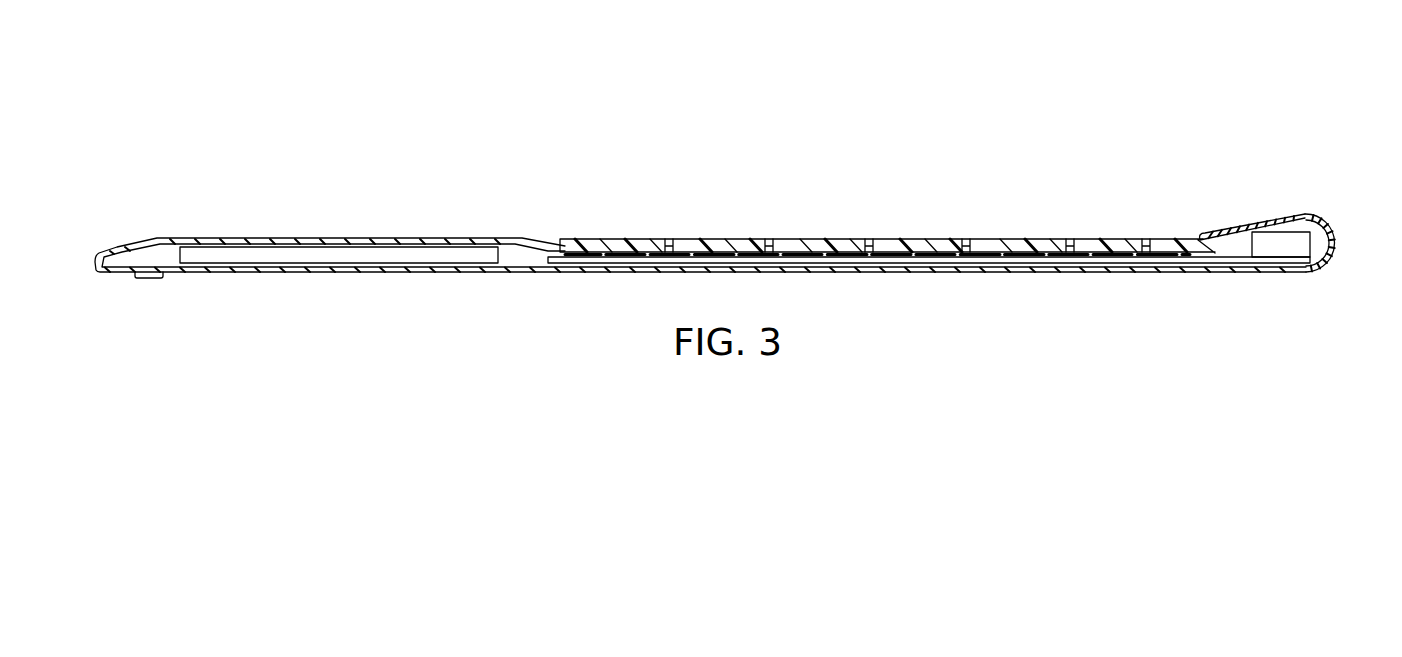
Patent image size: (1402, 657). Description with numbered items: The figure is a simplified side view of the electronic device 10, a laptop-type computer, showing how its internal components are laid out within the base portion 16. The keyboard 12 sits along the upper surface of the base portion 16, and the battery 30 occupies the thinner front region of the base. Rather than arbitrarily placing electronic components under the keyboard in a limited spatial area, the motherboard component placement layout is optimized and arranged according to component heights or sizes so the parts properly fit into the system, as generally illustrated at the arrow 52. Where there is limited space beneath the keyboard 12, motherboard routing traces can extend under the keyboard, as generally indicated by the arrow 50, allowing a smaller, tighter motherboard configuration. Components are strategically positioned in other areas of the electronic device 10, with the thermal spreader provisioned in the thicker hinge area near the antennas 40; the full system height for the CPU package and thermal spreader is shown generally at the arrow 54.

The electronic device 10 is at (547, 64).
The keyboard 12 is at (614, 235).
The base portion 16 is at (510, 280).
The battery 30 is at (318, 250).
The antennas 40 is at (1333, 249).
The arrow 50 is at (1070, 252).
The arrow 52 is at (1197, 262).
The arrow 54 is at (1222, 208).